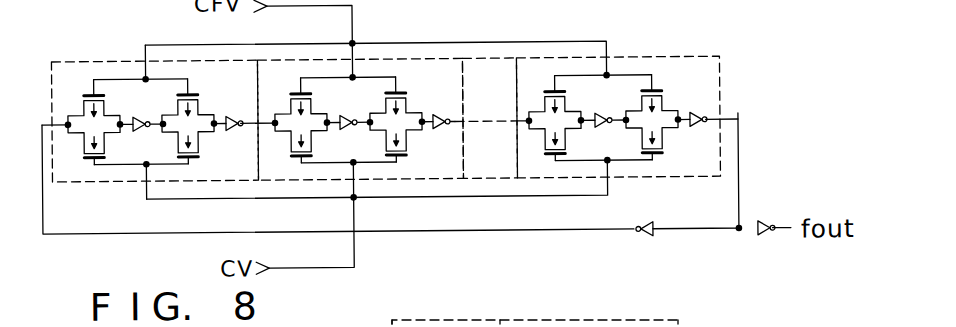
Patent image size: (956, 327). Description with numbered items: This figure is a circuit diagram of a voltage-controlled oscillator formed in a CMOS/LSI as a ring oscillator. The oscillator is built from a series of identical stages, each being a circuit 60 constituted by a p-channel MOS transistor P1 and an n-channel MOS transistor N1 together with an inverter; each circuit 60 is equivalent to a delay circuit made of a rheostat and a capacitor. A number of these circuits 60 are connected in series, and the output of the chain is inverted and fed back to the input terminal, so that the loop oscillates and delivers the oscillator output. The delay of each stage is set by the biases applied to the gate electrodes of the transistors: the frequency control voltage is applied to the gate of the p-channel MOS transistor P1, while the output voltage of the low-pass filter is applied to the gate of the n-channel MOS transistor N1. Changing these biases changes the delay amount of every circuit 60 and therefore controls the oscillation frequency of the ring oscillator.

The circuit 60 is at (385, 95).
The p-channel MOS transistor P1 is at (80, 109).
The n-channel MOS transistor N1 is at (80, 141).